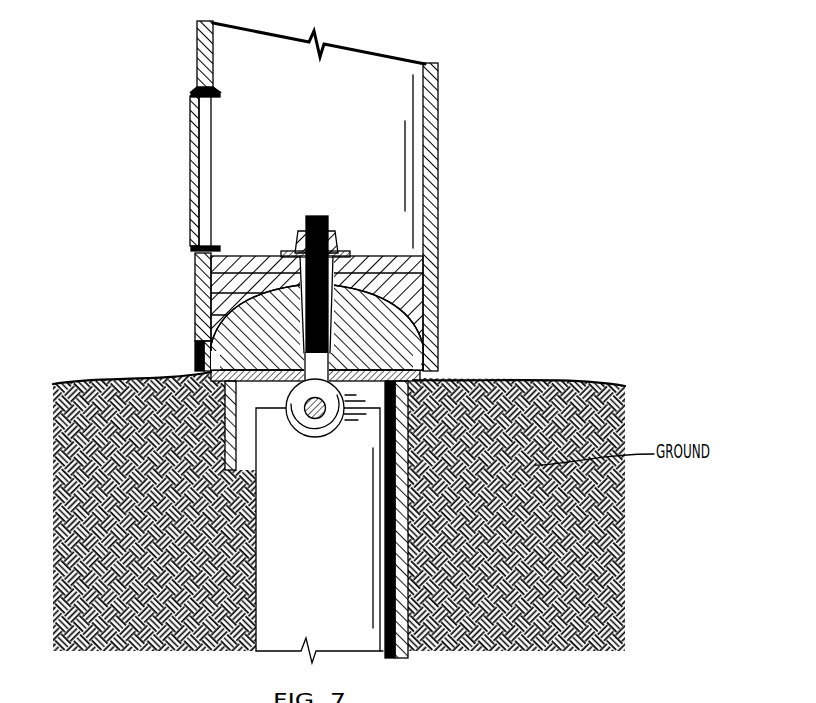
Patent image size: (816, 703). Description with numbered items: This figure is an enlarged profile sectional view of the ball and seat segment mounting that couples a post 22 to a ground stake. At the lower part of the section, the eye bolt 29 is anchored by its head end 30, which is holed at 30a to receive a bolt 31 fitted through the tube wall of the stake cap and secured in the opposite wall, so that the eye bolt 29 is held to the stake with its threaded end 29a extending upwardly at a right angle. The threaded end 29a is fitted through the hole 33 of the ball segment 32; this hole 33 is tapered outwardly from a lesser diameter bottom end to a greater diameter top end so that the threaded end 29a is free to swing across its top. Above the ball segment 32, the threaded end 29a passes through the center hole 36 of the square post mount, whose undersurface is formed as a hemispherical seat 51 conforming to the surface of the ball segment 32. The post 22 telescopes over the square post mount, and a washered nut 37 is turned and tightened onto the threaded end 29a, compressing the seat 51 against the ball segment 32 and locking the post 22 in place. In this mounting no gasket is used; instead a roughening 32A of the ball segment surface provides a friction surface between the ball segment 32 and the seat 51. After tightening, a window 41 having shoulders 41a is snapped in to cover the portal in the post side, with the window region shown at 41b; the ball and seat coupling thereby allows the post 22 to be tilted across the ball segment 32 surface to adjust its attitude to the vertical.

The post 22 is at (430, 120).
The window 41 is at (198, 148).
The shoulders 41a is at (185, 163).
The liner flange 41b is at (190, 82).
The center hole 36 is at (187, 268).
The threaded end 29a is at (187, 285).
The hole 33 is at (187, 308).
The eye bolt 29 is at (187, 338).
The roughening 32A is at (430, 269).
The ball segment 32 is at (430, 334).
The washered nut 37 is at (320, 228).
The seat 51 is at (343, 248).
The head end 30 is at (325, 420).
The hole 30a is at (287, 408).
The bolt 31 is at (304, 405).